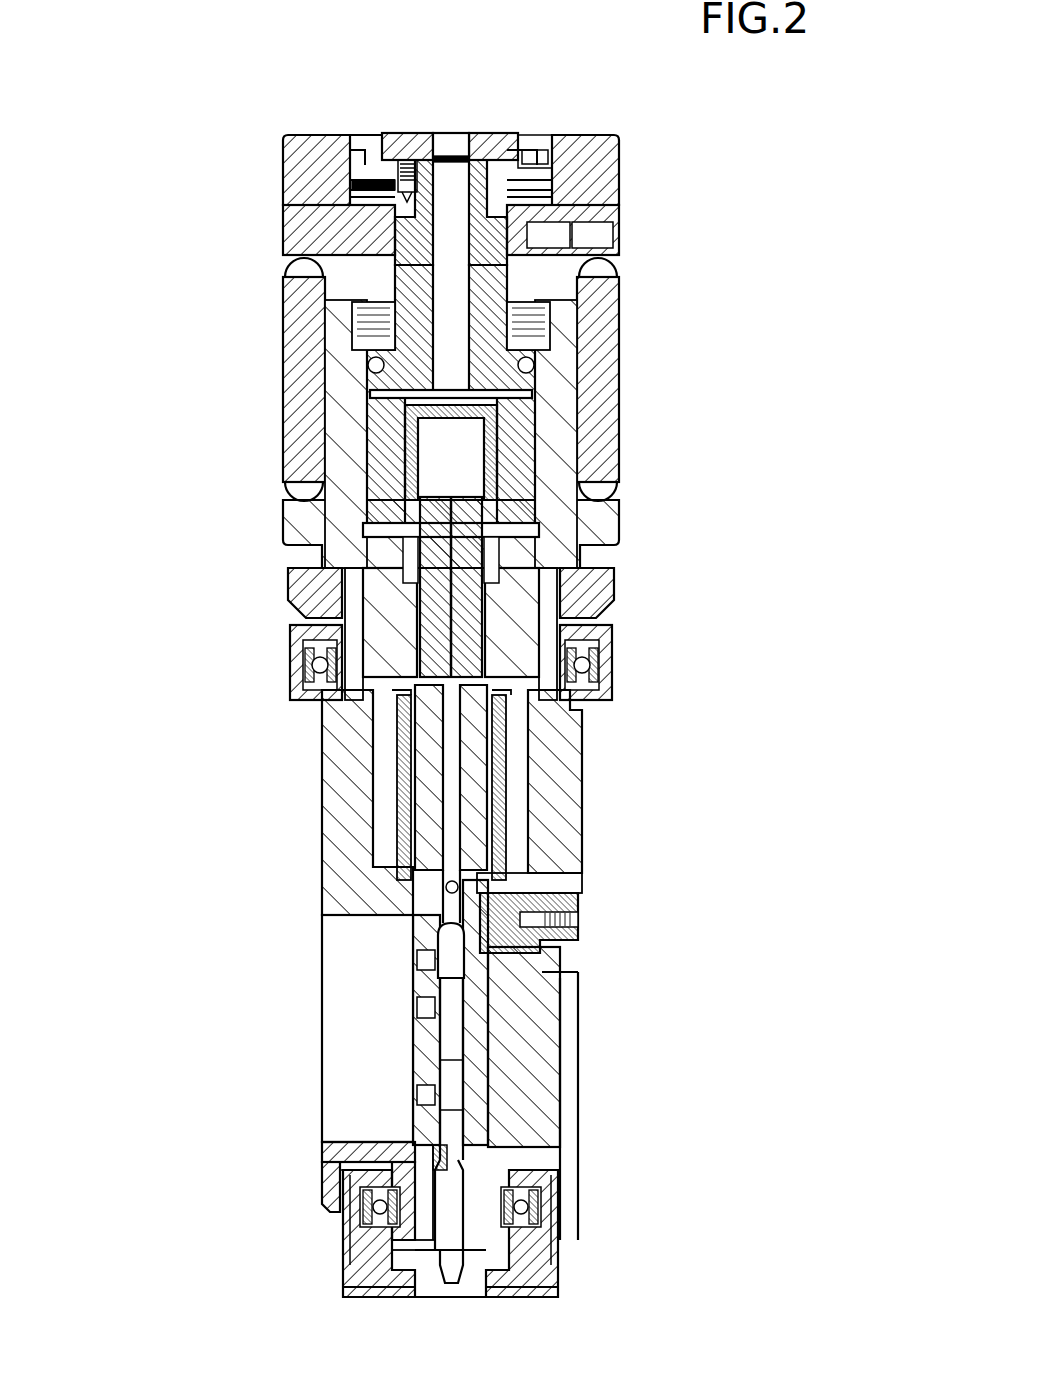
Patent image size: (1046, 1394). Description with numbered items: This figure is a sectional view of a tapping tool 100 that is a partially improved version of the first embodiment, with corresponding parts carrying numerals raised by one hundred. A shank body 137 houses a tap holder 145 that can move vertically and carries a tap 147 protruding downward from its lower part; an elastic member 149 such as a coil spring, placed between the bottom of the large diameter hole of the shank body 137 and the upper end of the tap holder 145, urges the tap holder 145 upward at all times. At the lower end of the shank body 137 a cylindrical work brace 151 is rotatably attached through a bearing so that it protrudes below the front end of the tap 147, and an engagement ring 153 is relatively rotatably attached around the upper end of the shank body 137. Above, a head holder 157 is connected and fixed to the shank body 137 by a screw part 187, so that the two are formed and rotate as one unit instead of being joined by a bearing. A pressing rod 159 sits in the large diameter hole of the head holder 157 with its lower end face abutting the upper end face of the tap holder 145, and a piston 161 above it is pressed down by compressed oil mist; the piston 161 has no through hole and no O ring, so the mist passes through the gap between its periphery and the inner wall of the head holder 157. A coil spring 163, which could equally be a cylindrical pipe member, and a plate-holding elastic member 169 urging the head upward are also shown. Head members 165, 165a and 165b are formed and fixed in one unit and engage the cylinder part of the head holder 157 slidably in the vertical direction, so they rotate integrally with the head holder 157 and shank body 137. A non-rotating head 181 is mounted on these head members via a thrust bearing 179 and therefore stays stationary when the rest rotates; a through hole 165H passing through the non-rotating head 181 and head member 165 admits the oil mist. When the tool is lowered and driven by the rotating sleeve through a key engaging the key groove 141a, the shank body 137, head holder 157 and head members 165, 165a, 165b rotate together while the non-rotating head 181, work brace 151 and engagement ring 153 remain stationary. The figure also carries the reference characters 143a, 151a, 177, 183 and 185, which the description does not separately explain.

The tapping tool 100 is at (200, 122).
The shank body 137 is at (570, 758).
The key groove 141a is at (578, 1100).
The set screw block 143a is at (540, 845).
The tap holder 145 is at (520, 1130).
The tap 147 is at (465, 1265).
The elastic member 149 is at (393, 820).
The work brace 151 is at (378, 1275).
The flange wall 151a is at (352, 1254).
The engagement ring 153 is at (292, 700).
The head holder 157 is at (283, 524).
The pressing rod 159 is at (293, 580).
The piston 161 is at (380, 406).
The coil spring 163 is at (382, 460).
The head member 165 is at (619, 158).
The head member 165a is at (288, 236).
The head member 165b is at (395, 286).
The through hole 165H is at (450, 156).
The plate-holding elastic member 169 is at (290, 356).
The retainer 177 is at (540, 135).
The thrust bearing 179 is at (385, 138).
The non-rotating head 181 is at (500, 138).
The lower bearing 183 is at (545, 1240).
The upper bearing 185 is at (292, 660).
The screw part 187 is at (342, 673).